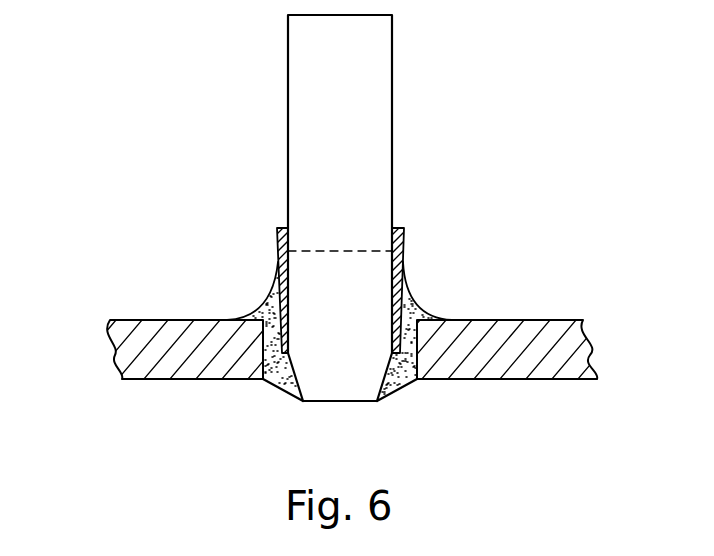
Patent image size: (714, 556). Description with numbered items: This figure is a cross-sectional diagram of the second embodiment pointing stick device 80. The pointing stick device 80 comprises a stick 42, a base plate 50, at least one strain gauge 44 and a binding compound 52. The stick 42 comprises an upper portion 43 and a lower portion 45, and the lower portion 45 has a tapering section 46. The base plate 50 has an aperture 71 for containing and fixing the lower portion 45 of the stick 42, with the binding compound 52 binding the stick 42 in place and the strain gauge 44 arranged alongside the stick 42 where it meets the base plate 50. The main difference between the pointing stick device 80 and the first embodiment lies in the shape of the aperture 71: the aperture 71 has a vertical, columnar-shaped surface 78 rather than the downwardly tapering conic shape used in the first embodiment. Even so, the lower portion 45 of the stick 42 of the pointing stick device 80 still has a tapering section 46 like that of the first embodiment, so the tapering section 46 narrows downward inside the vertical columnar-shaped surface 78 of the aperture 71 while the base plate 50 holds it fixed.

The pointing stick device 80 is at (168, 60).
The stick 42 is at (392, 52).
The upper portion 43 is at (366, 157).
The strain gauge 44 is at (402, 231).
The lower portion 45 is at (366, 350).
The tapering section 46 is at (291, 319).
The base plate 50 is at (527, 337).
The binding compound 52 is at (413, 300).
The aperture 71 is at (270, 337).
The columnar-shaped surface 78 is at (427, 375).